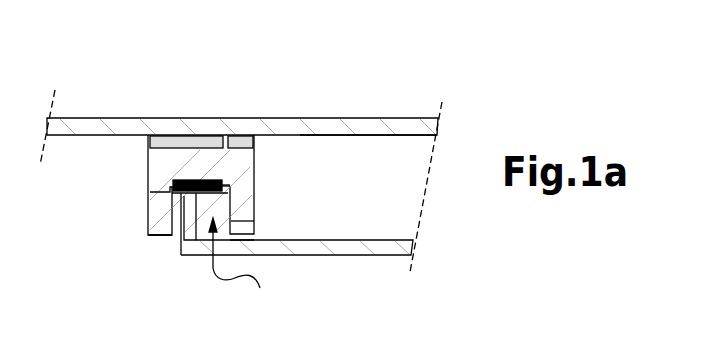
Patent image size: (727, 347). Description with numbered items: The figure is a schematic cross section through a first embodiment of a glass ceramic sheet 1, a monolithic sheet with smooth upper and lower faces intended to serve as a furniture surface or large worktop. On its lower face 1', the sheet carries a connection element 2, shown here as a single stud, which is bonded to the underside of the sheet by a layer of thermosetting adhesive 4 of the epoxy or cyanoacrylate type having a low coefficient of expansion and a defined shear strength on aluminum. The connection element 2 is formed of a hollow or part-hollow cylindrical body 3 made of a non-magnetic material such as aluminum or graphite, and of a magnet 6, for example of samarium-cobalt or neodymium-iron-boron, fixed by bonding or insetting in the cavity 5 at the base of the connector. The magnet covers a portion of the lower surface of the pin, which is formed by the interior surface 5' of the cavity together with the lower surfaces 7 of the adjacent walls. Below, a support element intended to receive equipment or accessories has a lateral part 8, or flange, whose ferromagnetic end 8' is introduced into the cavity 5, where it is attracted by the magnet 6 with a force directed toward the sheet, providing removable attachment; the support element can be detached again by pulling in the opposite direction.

The sheet 1 is at (242, 84).
The lower face 1' is at (368, 176).
The connection element 2 is at (147, 173).
The cylindrical body 3 is at (254, 200).
The thermosetting adhesive 4 is at (178, 136).
The cavity 5 is at (239, 271).
The interior surface of the cavity 5' is at (200, 139).
The magnet 6 is at (213, 180).
The lower surfaces of the adjacent walls 7 is at (162, 237).
The lateral part 8 is at (297, 275).
The end 8' is at (121, 238).